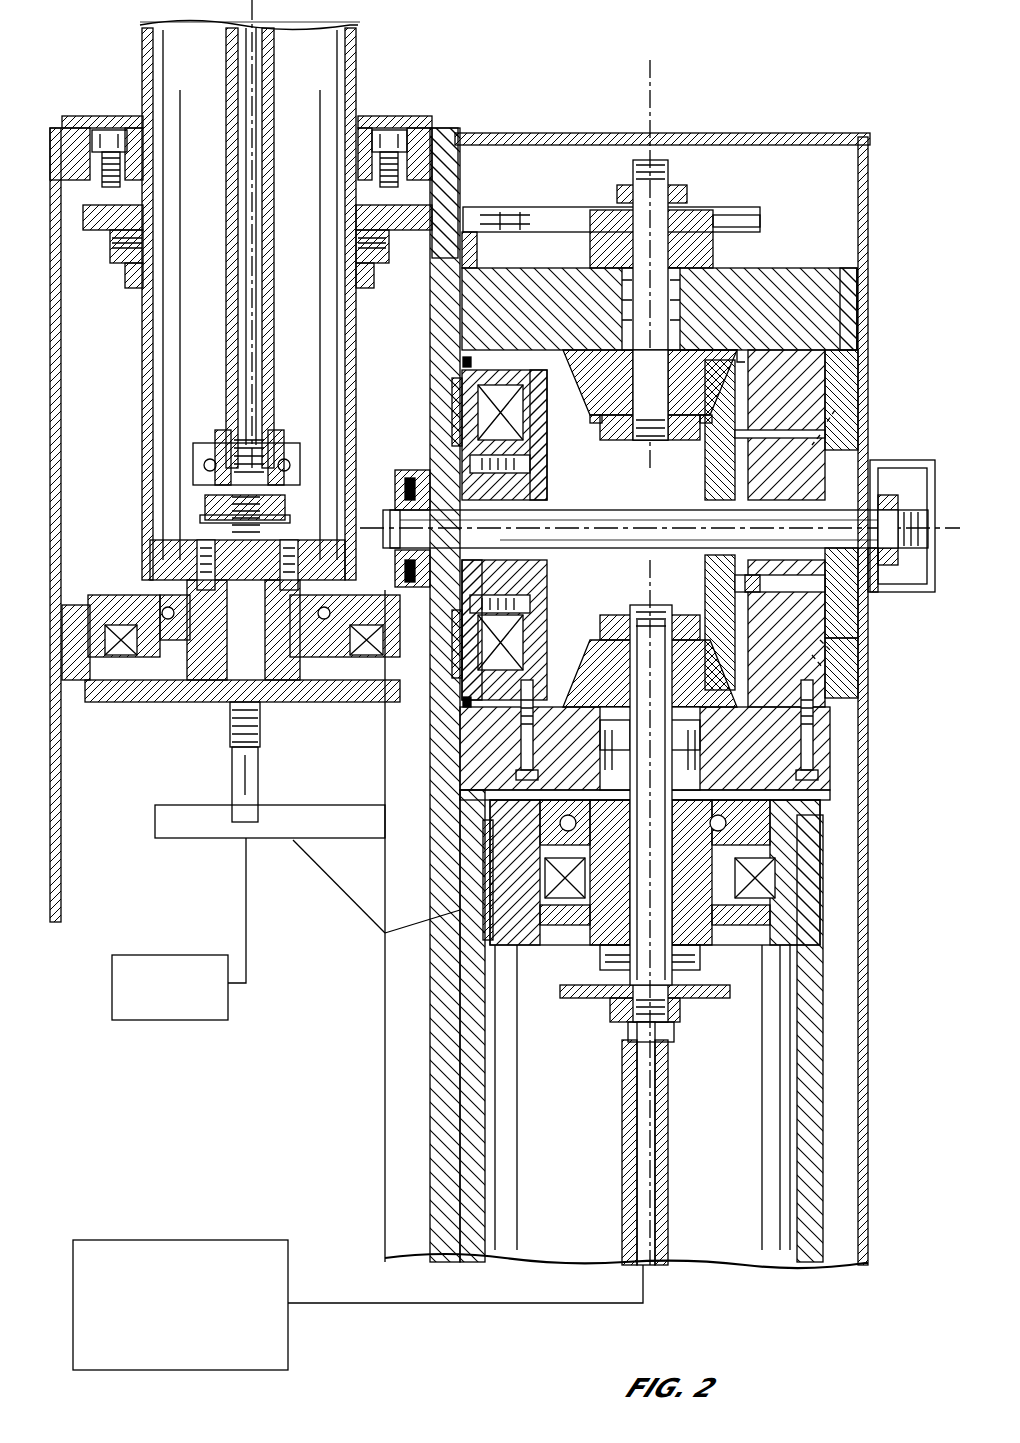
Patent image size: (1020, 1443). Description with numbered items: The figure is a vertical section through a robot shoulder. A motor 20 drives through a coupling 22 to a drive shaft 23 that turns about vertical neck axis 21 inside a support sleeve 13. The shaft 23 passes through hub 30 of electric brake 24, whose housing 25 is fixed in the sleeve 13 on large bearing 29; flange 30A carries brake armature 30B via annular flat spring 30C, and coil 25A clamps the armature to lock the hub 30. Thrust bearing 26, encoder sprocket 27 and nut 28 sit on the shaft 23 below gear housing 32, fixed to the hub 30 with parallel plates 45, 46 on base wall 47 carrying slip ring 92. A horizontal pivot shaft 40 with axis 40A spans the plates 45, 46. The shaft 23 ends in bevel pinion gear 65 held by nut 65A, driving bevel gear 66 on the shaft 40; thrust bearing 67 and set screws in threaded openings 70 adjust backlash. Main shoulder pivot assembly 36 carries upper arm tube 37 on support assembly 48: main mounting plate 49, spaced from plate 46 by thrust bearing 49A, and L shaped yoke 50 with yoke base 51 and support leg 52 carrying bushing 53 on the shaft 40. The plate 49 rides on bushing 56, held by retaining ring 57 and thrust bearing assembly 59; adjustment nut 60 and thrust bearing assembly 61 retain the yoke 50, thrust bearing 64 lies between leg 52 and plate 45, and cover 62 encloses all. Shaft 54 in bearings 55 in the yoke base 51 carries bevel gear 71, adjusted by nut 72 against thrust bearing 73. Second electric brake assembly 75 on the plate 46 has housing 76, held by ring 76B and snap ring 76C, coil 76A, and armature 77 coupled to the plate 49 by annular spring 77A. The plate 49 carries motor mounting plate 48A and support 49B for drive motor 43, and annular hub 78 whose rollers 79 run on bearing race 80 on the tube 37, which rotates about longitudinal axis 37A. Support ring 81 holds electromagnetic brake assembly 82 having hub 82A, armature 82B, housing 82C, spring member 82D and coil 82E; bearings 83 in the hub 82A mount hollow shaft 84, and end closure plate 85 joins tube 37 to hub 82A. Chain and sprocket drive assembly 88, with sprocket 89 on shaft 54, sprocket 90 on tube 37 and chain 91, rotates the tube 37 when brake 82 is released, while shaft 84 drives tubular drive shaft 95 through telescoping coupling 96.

The support sleeve 13 is at (815, 1122).
The motor 20 is at (152, 1240).
The neck axis 21 is at (640, 1192).
The elongated coupling 22 is at (670, 1152).
The drive shaft 23 is at (655, 1077).
The electric brake 24 is at (455, 930).
The brake housing 25 is at (710, 872).
The coil 25A is at (780, 880).
The thrust bearing 26 is at (600, 965).
The drive sprocket 27 is at (590, 998).
The nut 28 is at (682, 1015).
The large bearing 29 is at (825, 818).
The hub 30 is at (540, 945).
The flange 30A is at (745, 948).
The brake armature 30B is at (485, 910).
The annular flat spring 30C is at (780, 925).
The gear housing 32 is at (535, 688).
The main shoulder pivot assembly 36 is at (870, 335).
The upper arm tube 37 is at (362, 52).
The longitudinal axis 37A is at (142, 22).
The pivot shaft 40 is at (650, 535).
The pivot shaft axis 40A is at (615, 540).
The drive motor 43 is at (160, 955).
The plate 45 is at (855, 340).
The plate 46 is at (530, 630).
The base wall 47 is at (780, 728).
The support assembly 48 is at (445, 100).
The motor mounting plate 48A is at (405, 1058).
The main mounting plate 49 is at (470, 240).
The annular thrust bearing 49A is at (463, 360).
The support 49B is at (300, 815).
The L shaped yoke 50 is at (800, 270).
The yoke base 51 is at (850, 285).
The support leg 52 is at (858, 380).
The bushing 53 is at (880, 590).
The shaft 54 is at (645, 165).
The bearings 55 is at (590, 300).
The bushing 56 is at (470, 520).
The retaining ring 57 is at (395, 490).
The thrust bearing assembly 59 is at (410, 476).
The adjustment nut 60 is at (918, 470).
The thrust bearing assembly 61 is at (888, 490).
The outer housing 62 is at (805, 133).
The thrust bearing 64 is at (850, 620).
The bevel pinion gear 65 is at (610, 660).
The nut 65A is at (628, 615).
The bevel gear 66 is at (748, 470).
The thrust bearing 67 is at (745, 583).
The threaded openings 70 is at (870, 388).
The bevel gear 71 is at (700, 423).
The nut 72 is at (600, 423).
The thrust bearing 73 is at (735, 340).
The second electric brake assembly 75 is at (548, 470).
The brake housing 76 is at (534, 535).
The coil 76A is at (520, 420).
The annular metal ring 76B is at (512, 476).
The snap ring 76C is at (460, 440).
The armature 77 is at (470, 390).
The annular spring 77A is at (455, 405).
The annular hub 78 is at (445, 175).
The rollers 79 is at (105, 140).
The inner bearing race 80 is at (132, 135).
The support ring 81 is at (55, 690).
The electromagnetic brake assembly 82 is at (231, 646).
The hub 82A is at (208, 703).
The armature 82B is at (168, 700).
The housing 82C is at (120, 610).
The annular spring member 82D is at (130, 703).
The coil 82E is at (110, 700).
The bearings 83 is at (290, 545).
The shaft 84 is at (232, 765).
The end closure plate 85 is at (247, 540).
The chain and sprocket drive assembly 88 is at (540, 210).
The sprocket 89 is at (720, 215).
The sprocket 90 is at (128, 282).
The chain 91 is at (490, 212).
The slip ring 92 is at (815, 760).
The drive shaft 95 is at (285, 370).
The coupling 96 is at (205, 443).